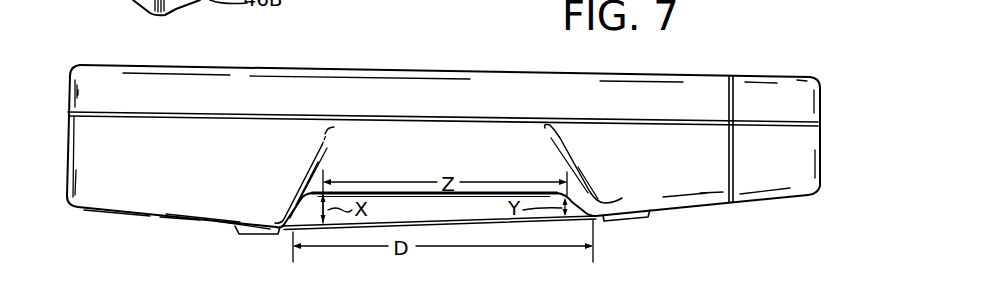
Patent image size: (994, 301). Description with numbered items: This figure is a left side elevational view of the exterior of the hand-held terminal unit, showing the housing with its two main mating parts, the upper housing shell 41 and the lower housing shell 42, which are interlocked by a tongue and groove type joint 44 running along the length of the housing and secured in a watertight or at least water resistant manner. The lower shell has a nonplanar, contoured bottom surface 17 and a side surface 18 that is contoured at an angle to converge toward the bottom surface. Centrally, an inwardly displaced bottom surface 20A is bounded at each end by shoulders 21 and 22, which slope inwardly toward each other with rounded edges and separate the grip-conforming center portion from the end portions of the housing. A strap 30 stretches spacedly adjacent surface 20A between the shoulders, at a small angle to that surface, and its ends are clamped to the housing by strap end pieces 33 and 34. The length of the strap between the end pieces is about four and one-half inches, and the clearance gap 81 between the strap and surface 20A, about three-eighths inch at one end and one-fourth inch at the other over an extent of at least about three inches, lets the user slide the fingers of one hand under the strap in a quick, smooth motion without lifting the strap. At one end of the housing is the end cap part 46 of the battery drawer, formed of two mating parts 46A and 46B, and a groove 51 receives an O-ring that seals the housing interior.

The contoured bottom surface 17 is at (167, 217).
The side surface 18 is at (123, 175).
The inwardly displaced bottom surface 20A is at (428, 197).
The shoulder 21 is at (303, 202).
The shoulder 22 is at (580, 214).
The strap 30 is at (487, 219).
The strap end piece 33 is at (245, 236).
The strap end piece 34 is at (638, 221).
The upper housing shell 41 is at (78, 76).
The lower housing shell 42 is at (76, 205).
The tongue and groove type joint 44 is at (68, 112).
The end cap part 46 is at (762, 208).
The mating part 46A is at (777, 83).
The mating part 46B is at (807, 160).
The groove 51 is at (455, 143).
The clearance gap 81 is at (393, 207).